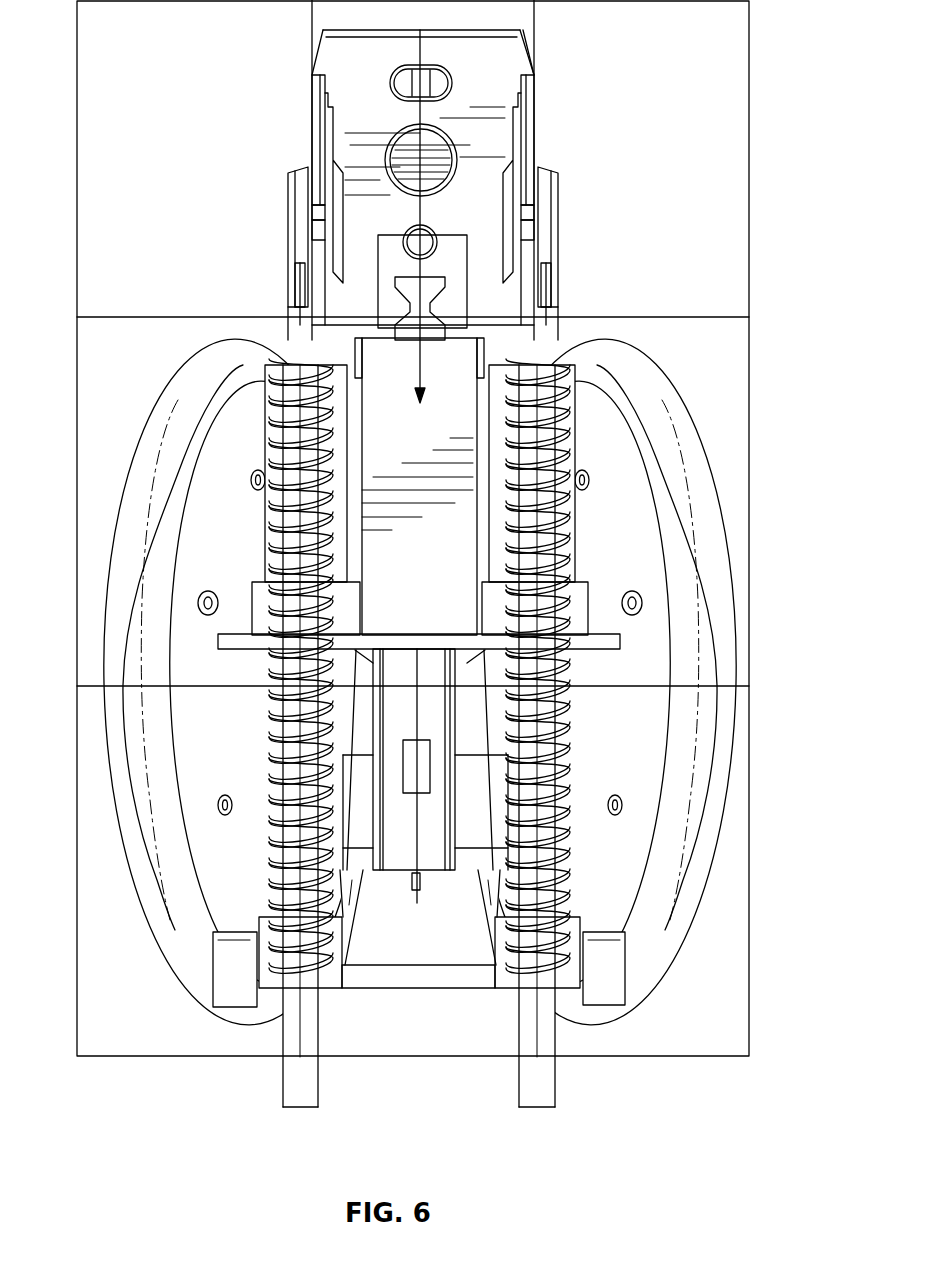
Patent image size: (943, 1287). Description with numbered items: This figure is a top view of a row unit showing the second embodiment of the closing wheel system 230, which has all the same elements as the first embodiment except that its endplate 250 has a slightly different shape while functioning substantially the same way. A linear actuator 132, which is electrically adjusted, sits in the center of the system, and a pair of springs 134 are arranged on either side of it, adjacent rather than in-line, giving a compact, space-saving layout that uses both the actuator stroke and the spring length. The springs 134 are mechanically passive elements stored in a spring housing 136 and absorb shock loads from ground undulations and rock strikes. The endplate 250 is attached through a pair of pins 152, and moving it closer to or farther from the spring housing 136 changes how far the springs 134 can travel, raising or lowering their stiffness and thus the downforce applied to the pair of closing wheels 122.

The closing wheels 122 is at (622, 518).
The linear actuator 132 is at (405, 435).
The springs 134 is at (567, 843).
The spring housing 136 is at (385, 640).
The pins 152 is at (235, 988).
The closing wheel system 230 is at (439, 554).
The endplate 250 is at (446, 980).